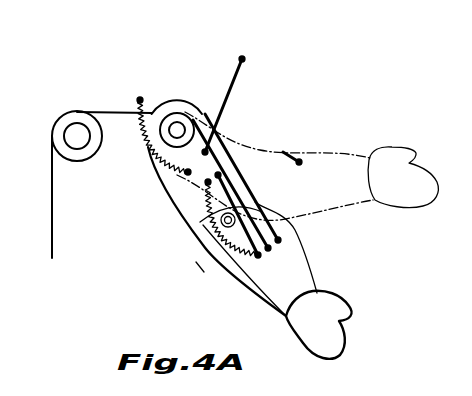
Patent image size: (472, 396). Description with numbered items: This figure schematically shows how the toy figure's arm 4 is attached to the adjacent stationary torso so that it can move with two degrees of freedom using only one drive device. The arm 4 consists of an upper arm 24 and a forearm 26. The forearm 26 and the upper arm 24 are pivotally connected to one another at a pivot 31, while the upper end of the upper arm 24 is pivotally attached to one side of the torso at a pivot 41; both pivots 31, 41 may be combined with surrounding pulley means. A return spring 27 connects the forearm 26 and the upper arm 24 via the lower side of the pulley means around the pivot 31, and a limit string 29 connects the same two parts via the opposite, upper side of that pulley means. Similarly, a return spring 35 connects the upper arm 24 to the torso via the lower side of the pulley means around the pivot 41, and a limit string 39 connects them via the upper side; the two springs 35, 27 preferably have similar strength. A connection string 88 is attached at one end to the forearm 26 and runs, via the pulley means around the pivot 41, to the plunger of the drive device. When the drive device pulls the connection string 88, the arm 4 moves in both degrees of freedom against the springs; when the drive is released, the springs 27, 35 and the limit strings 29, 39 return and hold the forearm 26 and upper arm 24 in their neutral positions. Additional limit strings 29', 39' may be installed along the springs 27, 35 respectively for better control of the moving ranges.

The arm 4 is at (315, 115).
The upper arm 24 is at (253, 139).
The forearm 26 is at (352, 152).
The return spring 27 is at (207, 213).
The limit string 29 is at (230, 254).
The additional limit string 29' is at (157, 284).
The pivot 31 is at (246, 212).
The return spring 35 is at (153, 111).
The limit string 39 is at (252, 85).
The additional limit string 39' is at (138, 149).
The pivot 41 is at (178, 122).
The connection string 88 is at (108, 112).